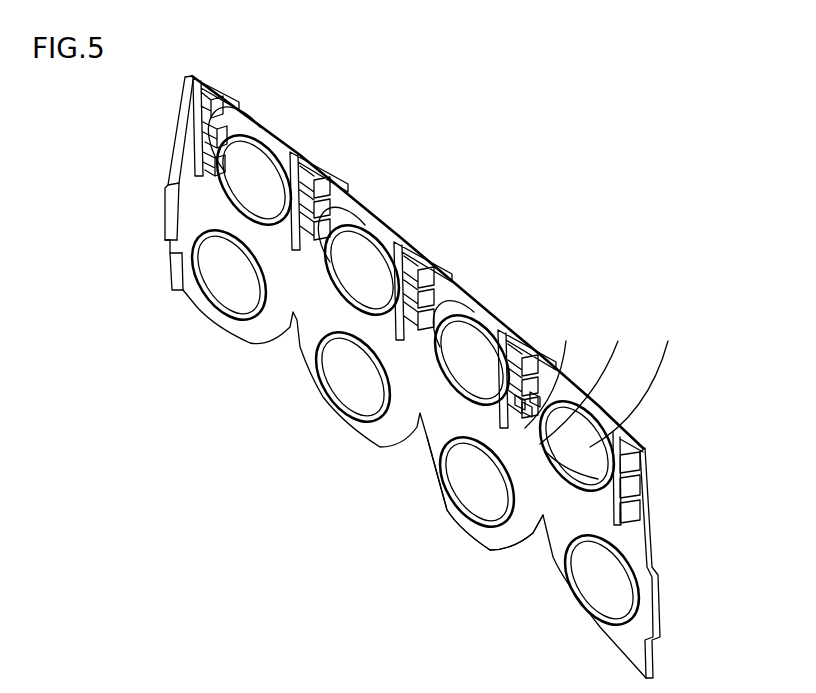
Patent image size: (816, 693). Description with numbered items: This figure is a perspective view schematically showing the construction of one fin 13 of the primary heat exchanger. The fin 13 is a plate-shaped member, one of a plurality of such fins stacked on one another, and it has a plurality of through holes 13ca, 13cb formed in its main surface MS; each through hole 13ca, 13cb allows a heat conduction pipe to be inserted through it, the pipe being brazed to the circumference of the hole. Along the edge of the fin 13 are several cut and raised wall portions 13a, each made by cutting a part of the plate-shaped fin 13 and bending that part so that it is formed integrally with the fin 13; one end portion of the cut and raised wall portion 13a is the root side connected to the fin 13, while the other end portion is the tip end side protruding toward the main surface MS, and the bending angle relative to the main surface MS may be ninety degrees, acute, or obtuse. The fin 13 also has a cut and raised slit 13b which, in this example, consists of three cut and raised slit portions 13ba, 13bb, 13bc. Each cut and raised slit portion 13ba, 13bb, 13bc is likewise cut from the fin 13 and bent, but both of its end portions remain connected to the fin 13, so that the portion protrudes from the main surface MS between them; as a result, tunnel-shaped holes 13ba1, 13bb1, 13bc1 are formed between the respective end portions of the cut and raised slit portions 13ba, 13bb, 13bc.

The fin 13 is at (652, 535).
The cut and raised wall portion 13a is at (199, 85).
The cut and raised slit 13b is at (693, 316).
The cut and raised slit portion 13ba is at (555, 374).
The cut and raised slit portion 13bb is at (590, 382).
The cut and raised slit portion 13bc is at (640, 383).
The tunnel-shaped hole 13ba1 is at (536, 398).
The tunnel-shaped hole 13bb1 is at (528, 405).
The tunnel-shaped hole 13bc1 is at (520, 400).
The through hole 13ca is at (260, 127).
The through hole 13cb is at (212, 291).
The main surface MS is at (514, 538).